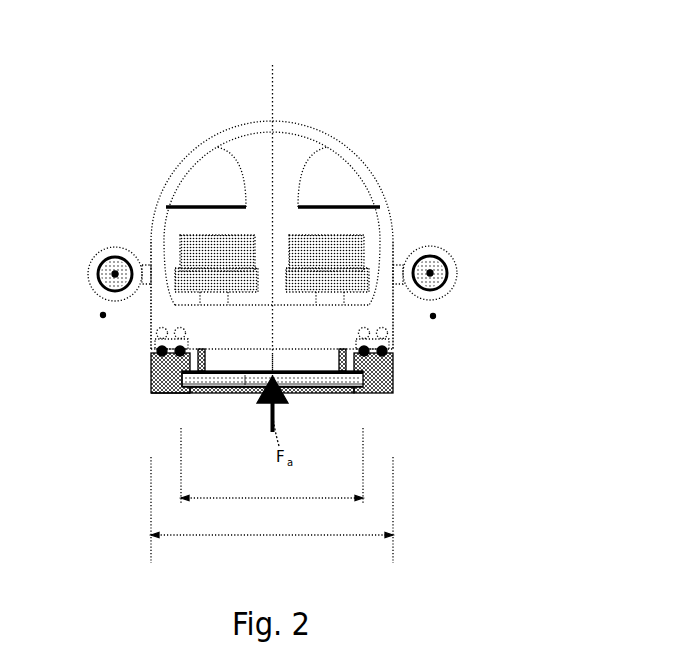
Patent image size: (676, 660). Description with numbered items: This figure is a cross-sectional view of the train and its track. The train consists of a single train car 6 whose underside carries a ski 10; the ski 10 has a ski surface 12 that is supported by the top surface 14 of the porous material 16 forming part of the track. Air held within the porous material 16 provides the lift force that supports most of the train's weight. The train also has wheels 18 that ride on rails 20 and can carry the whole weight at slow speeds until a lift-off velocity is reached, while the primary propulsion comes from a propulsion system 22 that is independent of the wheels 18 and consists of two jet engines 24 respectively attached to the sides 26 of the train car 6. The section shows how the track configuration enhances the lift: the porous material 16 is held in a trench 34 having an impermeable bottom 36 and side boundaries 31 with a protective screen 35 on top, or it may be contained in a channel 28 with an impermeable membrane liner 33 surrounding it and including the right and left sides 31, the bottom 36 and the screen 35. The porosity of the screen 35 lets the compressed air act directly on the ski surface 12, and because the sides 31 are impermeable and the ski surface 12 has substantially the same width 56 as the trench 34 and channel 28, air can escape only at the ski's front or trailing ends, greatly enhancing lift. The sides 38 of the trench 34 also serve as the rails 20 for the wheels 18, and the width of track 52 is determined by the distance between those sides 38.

The train car 6 is at (378, 154).
The ski 10 is at (216, 395).
The ski surface 12 is at (232, 394).
The top surface 14 is at (318, 393).
The porous material 16 is at (301, 394).
The wheels 18 is at (152, 355).
The rails 20 is at (391, 394).
The propulsion system 22 is at (102, 317).
The jet engines 24 is at (95, 290).
The sides 26 is at (150, 240).
The channel 28 is at (320, 394).
The side boundaries 31 is at (152, 391).
The impermeable membrane liner 33 is at (183, 397).
The trench 34 is at (303, 358).
The protective screen 35 is at (333, 370).
The bottom 36 is at (245, 395).
The sides of trench 38 is at (190, 393).
The width of track 52 is at (240, 535).
The width 56 is at (278, 498).